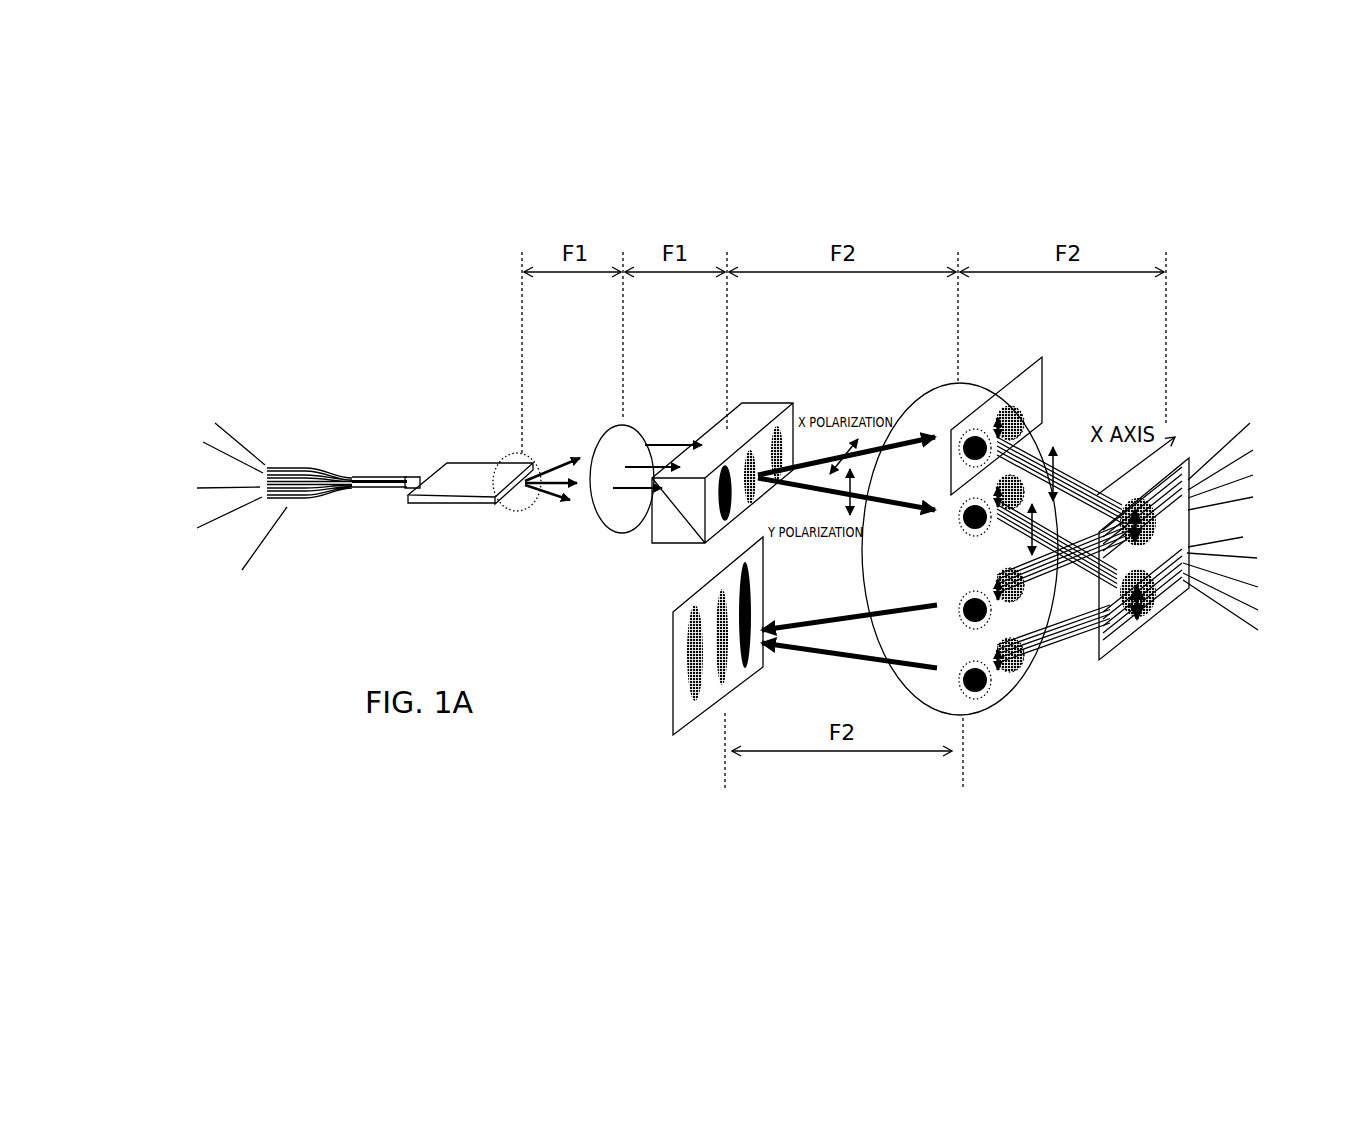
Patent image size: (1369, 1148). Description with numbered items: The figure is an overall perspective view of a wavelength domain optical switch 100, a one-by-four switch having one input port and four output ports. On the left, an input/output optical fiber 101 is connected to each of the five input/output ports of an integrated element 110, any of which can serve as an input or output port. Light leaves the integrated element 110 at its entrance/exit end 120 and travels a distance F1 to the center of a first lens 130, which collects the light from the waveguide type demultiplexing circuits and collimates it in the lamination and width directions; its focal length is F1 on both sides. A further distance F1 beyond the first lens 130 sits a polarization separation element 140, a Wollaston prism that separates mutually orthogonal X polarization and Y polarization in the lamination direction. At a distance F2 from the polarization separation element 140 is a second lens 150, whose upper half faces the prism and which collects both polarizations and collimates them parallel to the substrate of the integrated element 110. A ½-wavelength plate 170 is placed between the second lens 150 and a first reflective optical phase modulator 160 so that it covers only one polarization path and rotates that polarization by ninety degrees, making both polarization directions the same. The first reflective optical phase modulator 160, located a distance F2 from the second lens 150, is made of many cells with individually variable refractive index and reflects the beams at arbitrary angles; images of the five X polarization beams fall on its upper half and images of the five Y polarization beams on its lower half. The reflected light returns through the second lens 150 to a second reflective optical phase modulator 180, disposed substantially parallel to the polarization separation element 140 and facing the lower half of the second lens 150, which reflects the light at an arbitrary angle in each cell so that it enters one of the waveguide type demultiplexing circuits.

The wavelength domain optical switch 100 is at (347, 372).
The input/output optical fiber 101 is at (372, 490).
The integrated element 110 is at (457, 478).
The entrance/exit end 120 is at (513, 512).
The first lens 130 is at (607, 452).
The polarization separation element 140 is at (758, 418).
The second lens 150 is at (1003, 705).
The first reflective optical phase modulator 160 is at (1137, 633).
The ½-wavelength plate 170 is at (1032, 383).
The second reflective optical phase modulator 180 is at (738, 665).